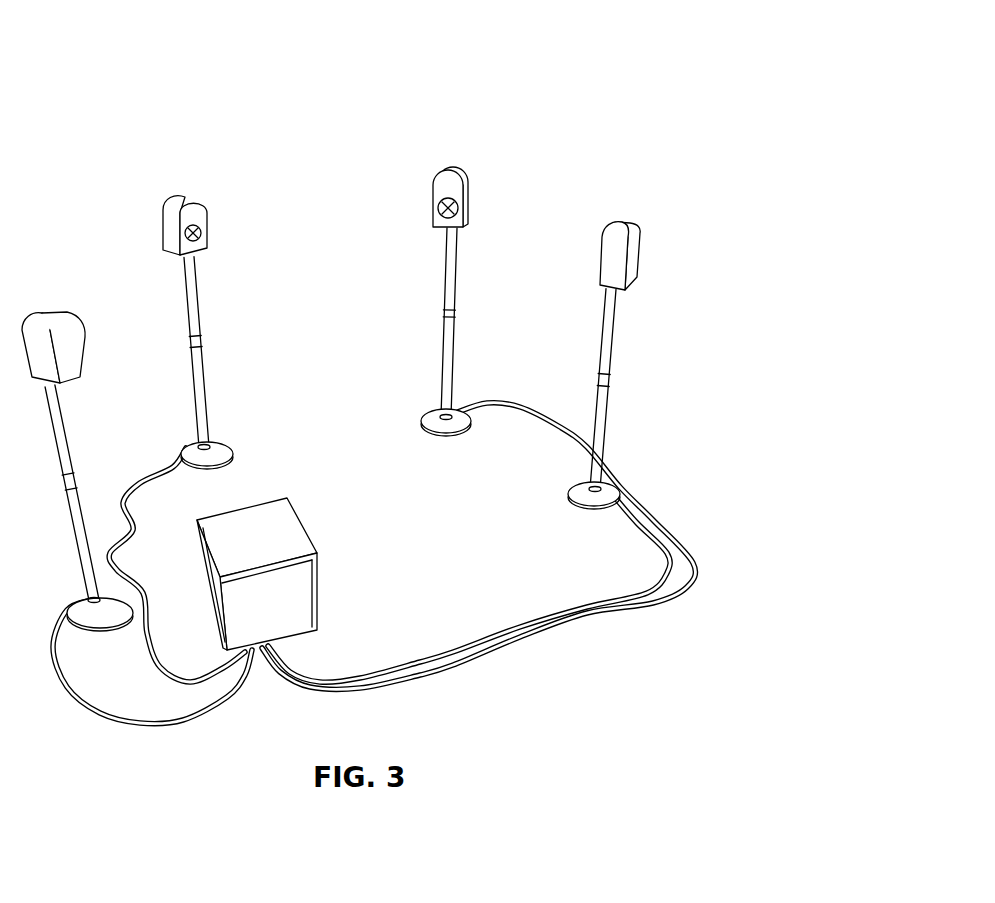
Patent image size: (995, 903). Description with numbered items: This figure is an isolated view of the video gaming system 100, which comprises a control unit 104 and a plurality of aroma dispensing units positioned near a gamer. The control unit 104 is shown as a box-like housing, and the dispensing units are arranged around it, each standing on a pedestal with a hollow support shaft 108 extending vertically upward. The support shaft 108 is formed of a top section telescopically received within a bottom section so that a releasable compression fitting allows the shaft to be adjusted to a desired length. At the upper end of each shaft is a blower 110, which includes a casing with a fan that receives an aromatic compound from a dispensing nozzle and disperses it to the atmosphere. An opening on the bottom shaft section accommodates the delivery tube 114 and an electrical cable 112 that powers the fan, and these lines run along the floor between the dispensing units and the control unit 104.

The video gaming system 100 is at (140, 50).
The control unit 104 is at (262, 515).
The support shaft 108 is at (442, 313).
The blower 110 is at (439, 207).
The electrical cable 112 is at (478, 412).
The delivery tube 114 is at (499, 403).